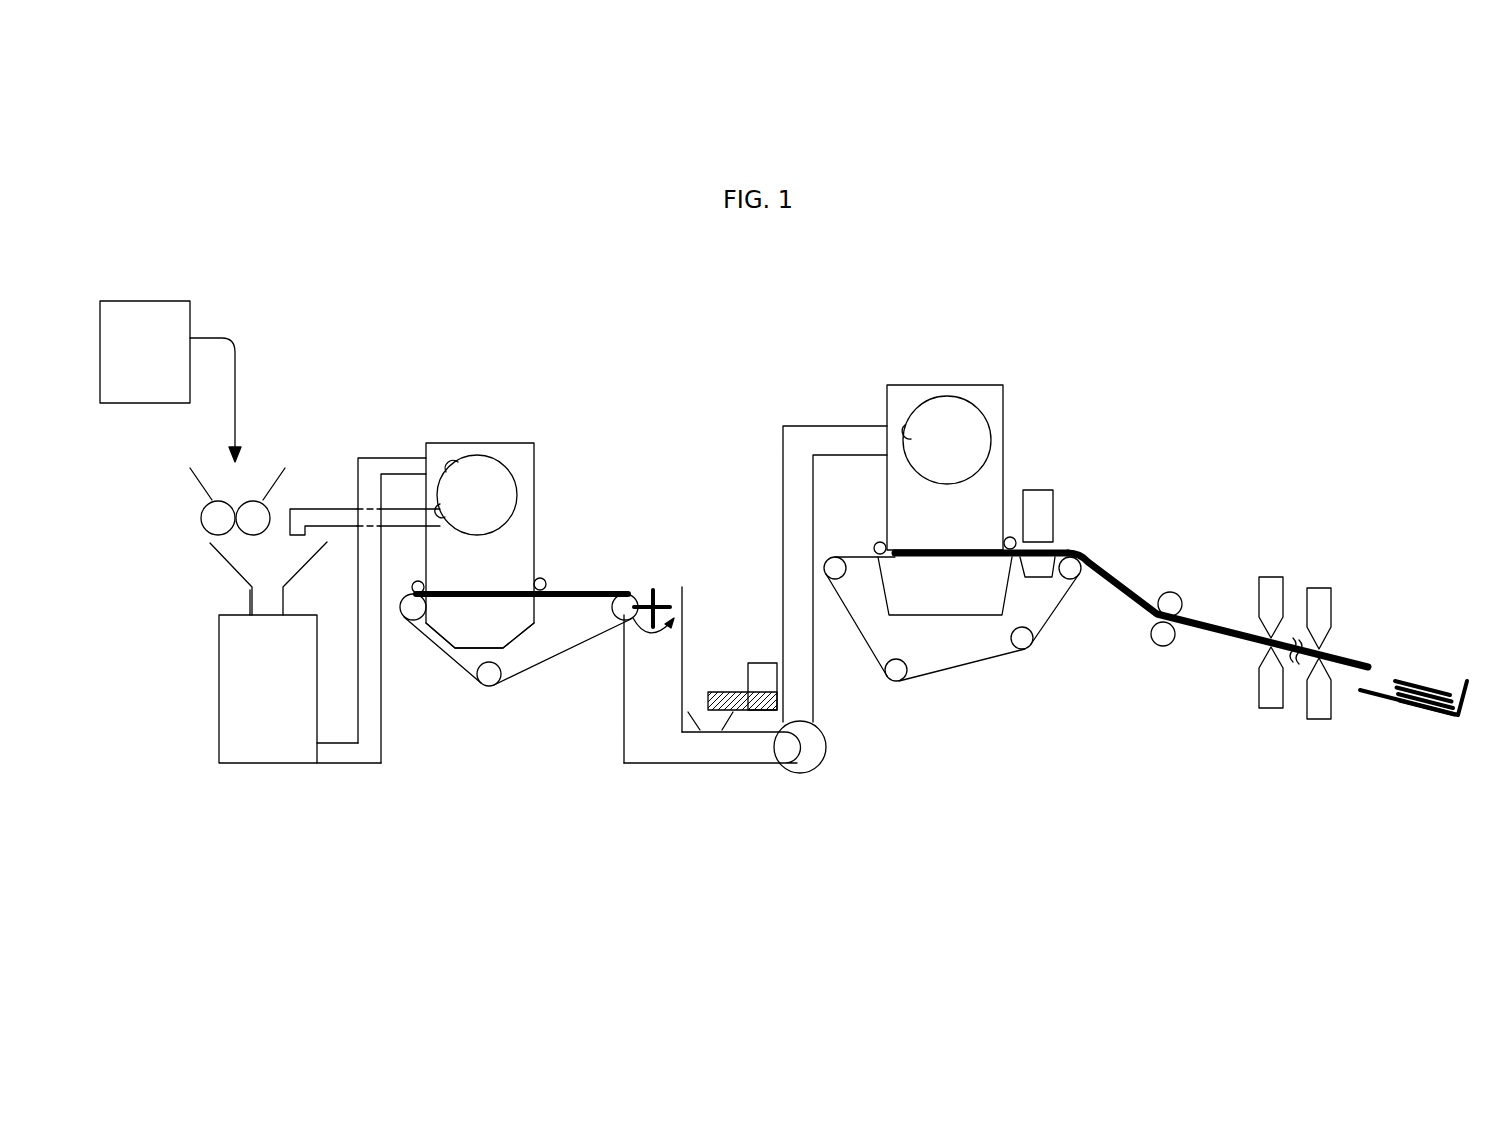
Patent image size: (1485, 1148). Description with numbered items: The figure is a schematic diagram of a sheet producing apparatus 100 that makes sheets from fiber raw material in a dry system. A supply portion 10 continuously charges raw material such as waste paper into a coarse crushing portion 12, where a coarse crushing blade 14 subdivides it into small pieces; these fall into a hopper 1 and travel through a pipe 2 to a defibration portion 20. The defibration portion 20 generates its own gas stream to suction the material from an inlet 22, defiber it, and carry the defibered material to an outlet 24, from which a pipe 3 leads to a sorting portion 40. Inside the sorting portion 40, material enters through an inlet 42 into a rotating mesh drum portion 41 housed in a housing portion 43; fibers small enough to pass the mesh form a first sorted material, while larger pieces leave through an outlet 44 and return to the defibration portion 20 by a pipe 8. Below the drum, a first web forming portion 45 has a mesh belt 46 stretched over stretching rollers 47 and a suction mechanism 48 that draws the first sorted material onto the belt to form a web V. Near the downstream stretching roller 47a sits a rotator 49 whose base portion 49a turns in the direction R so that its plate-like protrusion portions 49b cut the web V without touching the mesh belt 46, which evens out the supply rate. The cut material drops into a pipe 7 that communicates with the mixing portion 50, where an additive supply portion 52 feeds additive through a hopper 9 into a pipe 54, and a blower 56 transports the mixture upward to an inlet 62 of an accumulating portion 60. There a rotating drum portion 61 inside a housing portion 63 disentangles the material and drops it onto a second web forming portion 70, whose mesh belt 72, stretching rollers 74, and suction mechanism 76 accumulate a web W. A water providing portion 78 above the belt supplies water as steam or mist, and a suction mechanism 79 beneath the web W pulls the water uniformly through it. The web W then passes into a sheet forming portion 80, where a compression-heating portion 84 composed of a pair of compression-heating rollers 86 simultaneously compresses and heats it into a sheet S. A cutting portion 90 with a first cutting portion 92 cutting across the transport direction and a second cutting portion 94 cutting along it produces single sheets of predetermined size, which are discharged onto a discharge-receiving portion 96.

The hopper 1 is at (248, 575).
The pipe 2 is at (250, 598).
The pipe 3 is at (365, 604).
The pipe 7 is at (668, 680).
The pipe 8 is at (345, 509).
The hopper 9 is at (686, 720).
The supply portion 10 is at (198, 294).
The coarse crushing portion 12 is at (201, 488).
The coarse crushing blade 14 is at (212, 514).
The defibration portion 20 is at (269, 721).
The inlet 22 is at (265, 624).
The outlet 24 is at (305, 745).
The sorting portion 40 is at (557, 569).
The drum portion 41 is at (517, 495).
The inlet 42 is at (458, 470).
The housing portion 43 is at (535, 470).
The outlet 44 is at (440, 510).
The first web forming portion 45 is at (435, 672).
The mesh belt 46 is at (533, 667).
The stretching rollers 47 is at (413, 612).
The stretching roller 47a is at (619, 615).
The suction mechanism 48 is at (470, 636).
The rotator 49 is at (669, 564).
The base portion 49a is at (658, 605).
The protrusion portion 49b is at (645, 582).
The mixing portion 50 is at (738, 627).
The additive supply portion 52 is at (762, 663).
The pipe 54 is at (798, 578).
The blower 56 is at (813, 755).
The accumulating portion 60 is at (993, 439).
The drum portion 61 is at (990, 437).
The inlet 62 is at (912, 428).
The housing portion 63 is at (1005, 407).
The second web forming portion 70 is at (960, 629).
The mesh belt 72 is at (877, 548).
The stretching rollers 74 is at (835, 580).
The suction mechanism 76 is at (938, 592).
The water providing portion 78 is at (1040, 490).
The suction mechanism 79 is at (1040, 565).
The sheet forming portion 80 is at (1192, 577).
The compression-heating portion 84 is at (1193, 584).
The compression-heating rollers 86 is at (1162, 598).
The cutting portion 90 is at (1319, 604).
The first cutting portion 92 is at (1278, 563).
The second cutting portion 94 is at (1290, 517).
The discharge-receiving portion 96 is at (1445, 720).
The sheet producing apparatus 100 is at (1134, 299).
The web W is at (1110, 570).
The web V is at (562, 590).
The direction R is at (682, 638).
The sheet S is at (1232, 630).